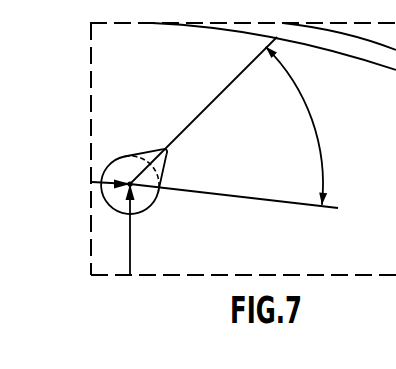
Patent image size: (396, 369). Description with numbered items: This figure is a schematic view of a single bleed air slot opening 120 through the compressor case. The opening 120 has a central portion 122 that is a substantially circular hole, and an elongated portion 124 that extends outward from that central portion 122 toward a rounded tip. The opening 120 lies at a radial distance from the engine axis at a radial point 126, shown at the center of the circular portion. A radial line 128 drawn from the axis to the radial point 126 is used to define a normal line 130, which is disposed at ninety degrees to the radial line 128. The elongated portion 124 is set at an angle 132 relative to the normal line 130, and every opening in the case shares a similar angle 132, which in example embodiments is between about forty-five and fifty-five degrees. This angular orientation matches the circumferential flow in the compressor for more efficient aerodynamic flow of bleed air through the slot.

The opening 120 is at (171, 173).
The central portion 122 is at (150, 195).
The elongated portion 124 is at (152, 151).
The radial point 126 is at (92, 182).
The radial line 128 is at (121, 250).
The normal line 130 is at (298, 204).
The angle 132 is at (317, 137).